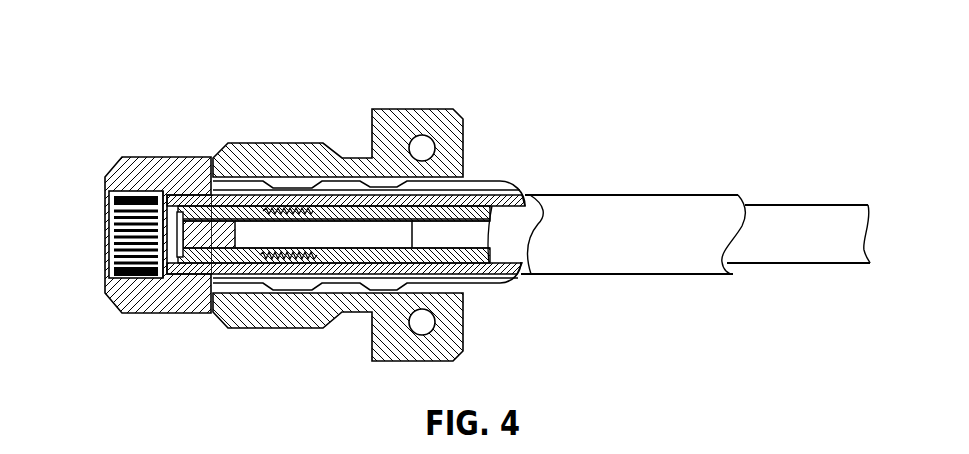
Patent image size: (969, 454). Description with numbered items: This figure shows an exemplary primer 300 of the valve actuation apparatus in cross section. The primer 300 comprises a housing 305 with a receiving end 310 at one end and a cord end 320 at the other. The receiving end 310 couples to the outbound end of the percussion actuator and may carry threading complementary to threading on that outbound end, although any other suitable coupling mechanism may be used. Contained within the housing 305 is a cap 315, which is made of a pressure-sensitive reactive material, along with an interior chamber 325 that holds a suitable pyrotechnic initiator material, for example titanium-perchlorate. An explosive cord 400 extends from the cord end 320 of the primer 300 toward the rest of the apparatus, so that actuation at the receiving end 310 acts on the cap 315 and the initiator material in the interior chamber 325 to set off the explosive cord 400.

The primer 300 is at (133, 80).
The housing 305 is at (260, 155).
The receiving end 310 is at (112, 222).
The cap 315 is at (177, 240).
The cord end 320 is at (495, 190).
The interior chamber 325 is at (278, 231).
The explosive cord 400 is at (770, 212).